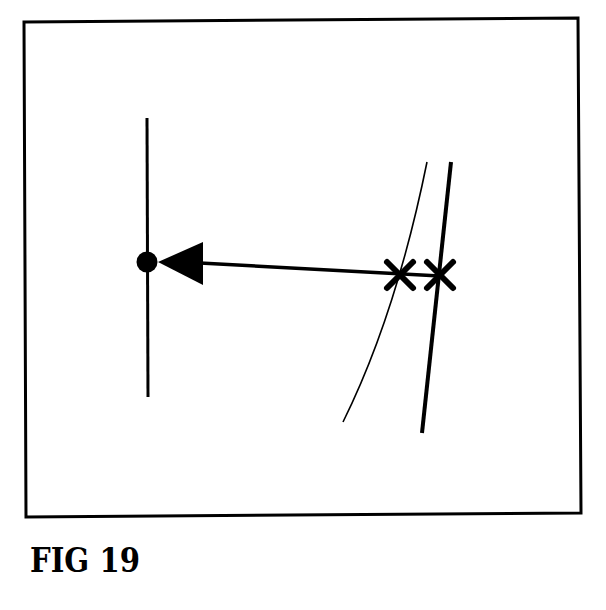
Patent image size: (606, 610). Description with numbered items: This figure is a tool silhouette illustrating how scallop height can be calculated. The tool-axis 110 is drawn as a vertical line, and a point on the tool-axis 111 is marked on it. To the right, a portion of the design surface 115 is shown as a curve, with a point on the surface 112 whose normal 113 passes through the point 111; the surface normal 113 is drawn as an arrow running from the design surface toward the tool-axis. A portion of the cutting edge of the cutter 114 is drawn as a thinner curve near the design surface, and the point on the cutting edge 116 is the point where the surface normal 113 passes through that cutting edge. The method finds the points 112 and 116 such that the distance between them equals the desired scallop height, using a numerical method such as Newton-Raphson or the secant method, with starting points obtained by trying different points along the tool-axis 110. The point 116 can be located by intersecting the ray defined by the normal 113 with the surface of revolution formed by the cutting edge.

The tool-axis 110 is at (160, 231).
The point on the tool-axis 111 is at (114, 259).
The point on the surface 112 is at (482, 278).
The surface normal 113 is at (299, 279).
The portion of the cutting edge of the cutter 114 is at (362, 312).
The portion of the design surface 115 is at (450, 318).
The point on the cutting edge 116 is at (370, 253).